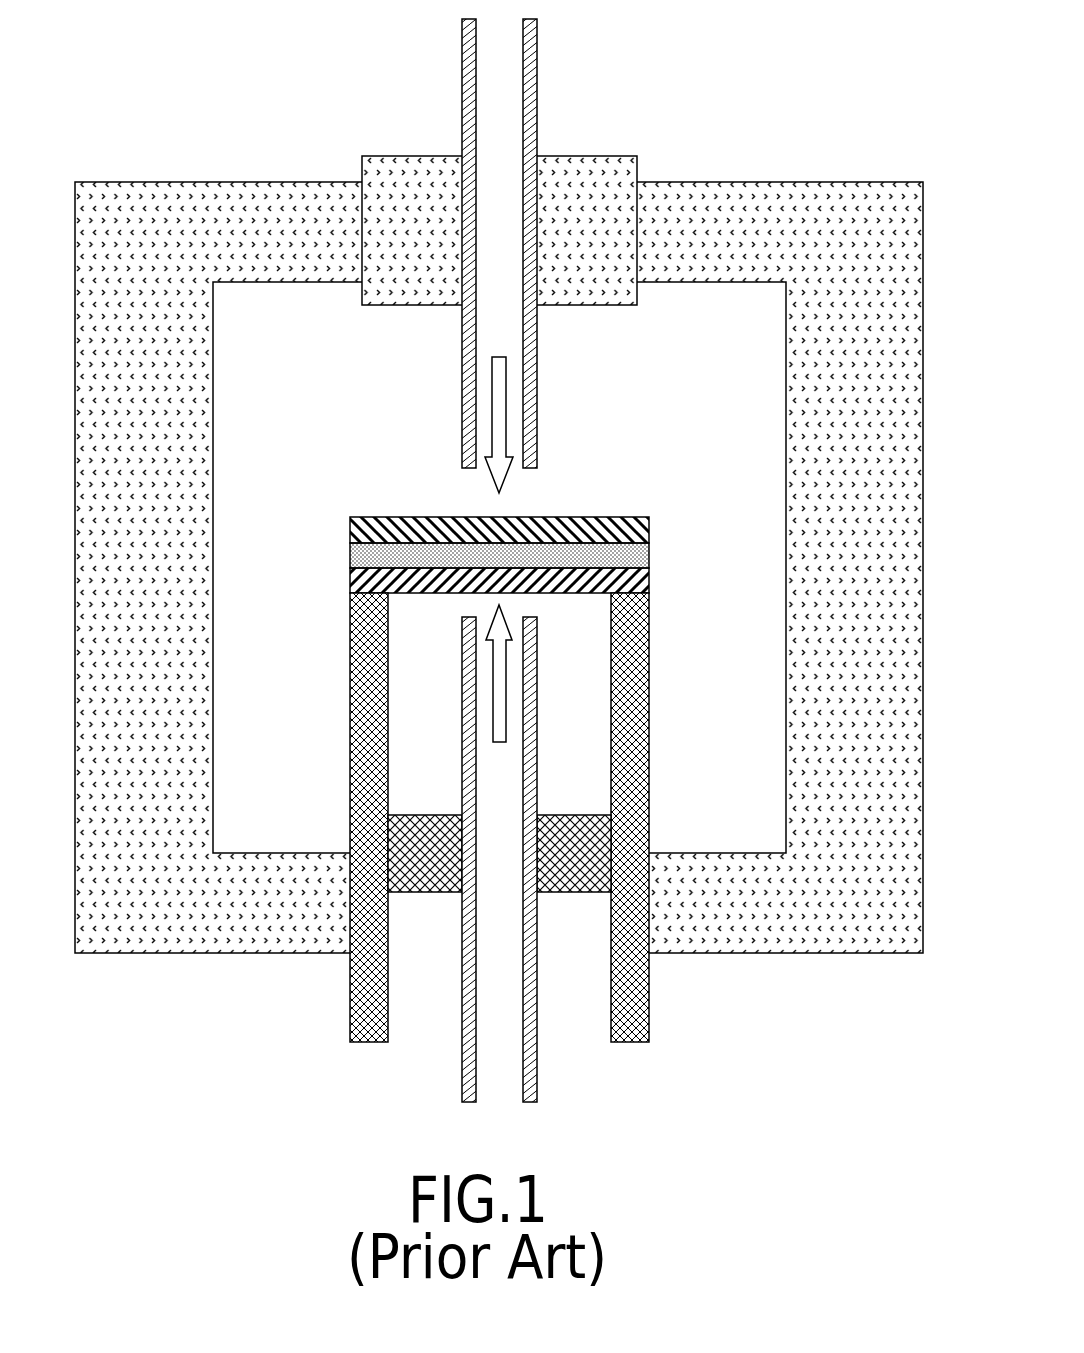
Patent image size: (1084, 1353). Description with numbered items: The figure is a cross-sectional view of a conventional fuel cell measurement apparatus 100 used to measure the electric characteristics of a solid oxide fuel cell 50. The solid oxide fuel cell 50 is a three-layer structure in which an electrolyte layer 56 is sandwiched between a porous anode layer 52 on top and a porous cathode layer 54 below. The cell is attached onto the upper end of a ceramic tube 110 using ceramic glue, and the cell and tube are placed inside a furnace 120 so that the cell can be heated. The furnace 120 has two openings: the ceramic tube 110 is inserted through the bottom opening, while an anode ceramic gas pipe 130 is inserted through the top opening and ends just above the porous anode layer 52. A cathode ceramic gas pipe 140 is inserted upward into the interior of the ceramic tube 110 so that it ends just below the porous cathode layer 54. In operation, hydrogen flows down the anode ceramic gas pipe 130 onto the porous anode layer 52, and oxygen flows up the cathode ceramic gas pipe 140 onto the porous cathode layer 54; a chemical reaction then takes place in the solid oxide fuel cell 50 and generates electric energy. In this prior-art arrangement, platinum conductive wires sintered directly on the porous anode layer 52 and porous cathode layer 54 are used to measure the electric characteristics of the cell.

The fuel cell measurement apparatus 100 is at (499, 619).
The ceramic tube 110 is at (362, 1018).
The furnace 120 is at (148, 920).
The anode ceramic gas pipe 130 is at (468, 68).
The cathode ceramic gas pipe 140 is at (464, 1092).
The solid oxide fuel cell 50 is at (437, 556).
The porous anode layer 52 is at (350, 525).
The porous cathode layer 54 is at (464, 587).
The electrolyte layer 56 is at (350, 556).